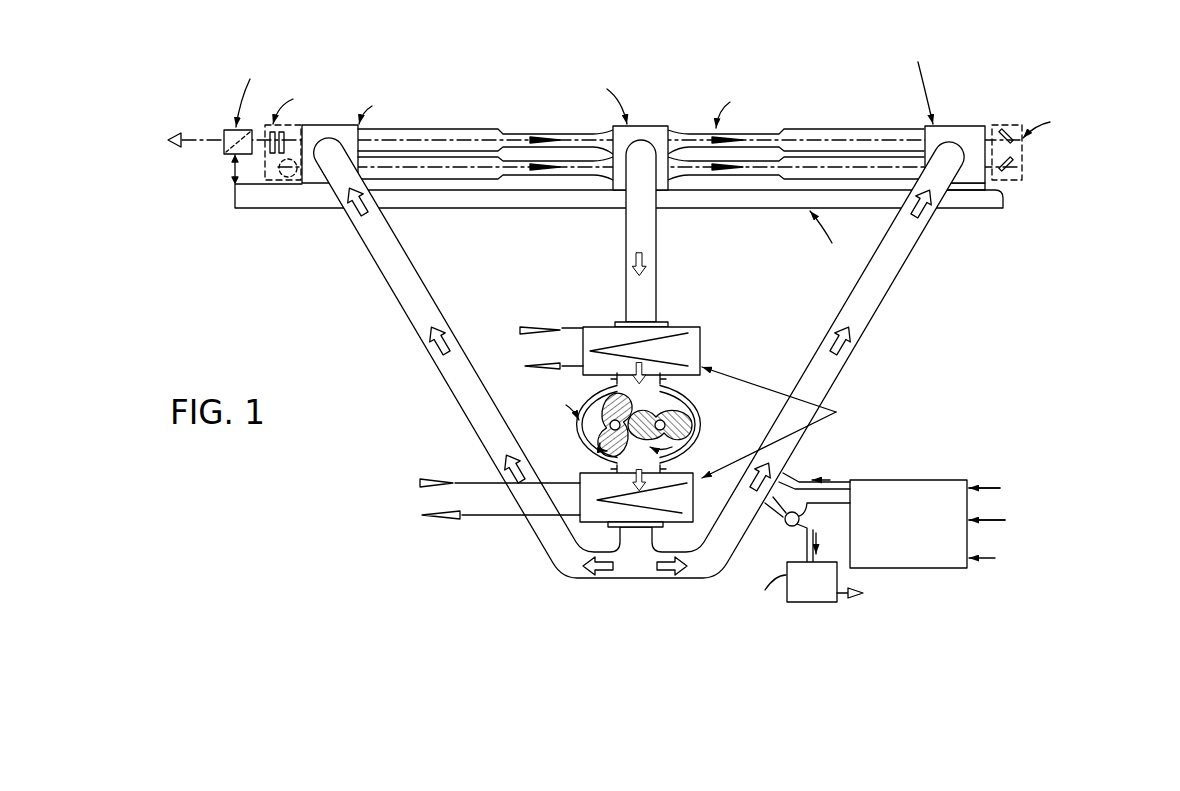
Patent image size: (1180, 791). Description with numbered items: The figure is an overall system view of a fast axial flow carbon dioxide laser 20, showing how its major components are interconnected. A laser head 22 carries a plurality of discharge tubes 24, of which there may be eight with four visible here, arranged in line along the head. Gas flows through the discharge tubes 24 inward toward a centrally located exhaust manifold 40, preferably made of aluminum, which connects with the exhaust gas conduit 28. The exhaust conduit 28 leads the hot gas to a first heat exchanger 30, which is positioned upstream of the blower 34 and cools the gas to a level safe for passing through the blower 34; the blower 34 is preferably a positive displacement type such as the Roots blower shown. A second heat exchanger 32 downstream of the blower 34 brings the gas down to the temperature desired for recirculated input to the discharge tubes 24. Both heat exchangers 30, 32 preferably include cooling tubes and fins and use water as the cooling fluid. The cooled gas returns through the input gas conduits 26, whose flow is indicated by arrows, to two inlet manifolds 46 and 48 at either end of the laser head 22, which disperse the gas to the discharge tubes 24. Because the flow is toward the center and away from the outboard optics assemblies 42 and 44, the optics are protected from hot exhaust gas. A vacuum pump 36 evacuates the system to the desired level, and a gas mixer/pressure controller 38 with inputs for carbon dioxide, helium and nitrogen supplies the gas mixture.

The fast axial flow carbon dioxide laser 20 is at (1044, 66).
The laser head 22 is at (957, 211).
The discharge tubes 24 is at (463, 167).
The input gas conduits 26 is at (388, 268).
The exhaust gas conduit 28 is at (658, 236).
The first heat exchanger 30 is at (700, 338).
The second heat exchanger 32 is at (692, 478).
The blower 34 is at (698, 413).
The vacuum pump 36 is at (797, 601).
The gas mixer/pressure controller 38 is at (928, 480).
The exhaust manifold 40 is at (641, 128).
The optics assembly 42 is at (301, 124).
The optics assembly 44 is at (1013, 125).
The inlet manifold 46 is at (318, 188).
The inlet manifold 48 is at (949, 130).